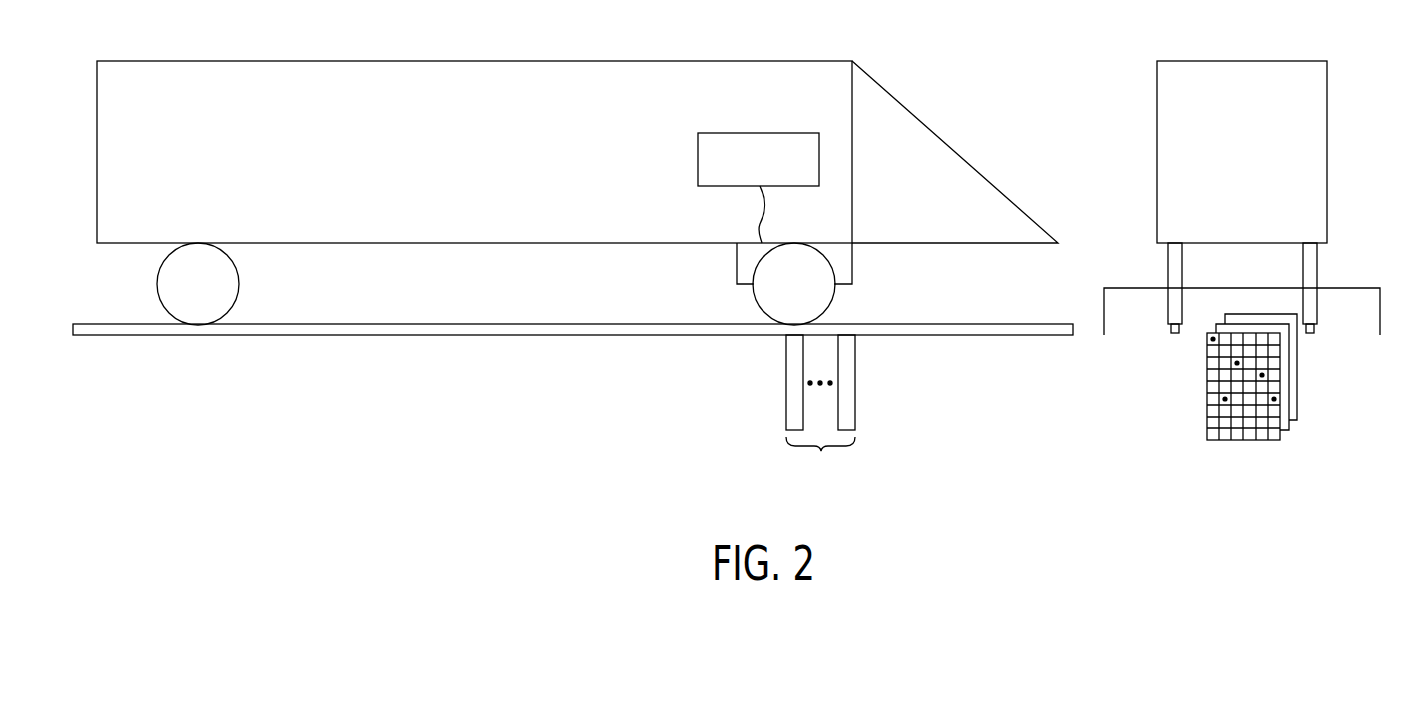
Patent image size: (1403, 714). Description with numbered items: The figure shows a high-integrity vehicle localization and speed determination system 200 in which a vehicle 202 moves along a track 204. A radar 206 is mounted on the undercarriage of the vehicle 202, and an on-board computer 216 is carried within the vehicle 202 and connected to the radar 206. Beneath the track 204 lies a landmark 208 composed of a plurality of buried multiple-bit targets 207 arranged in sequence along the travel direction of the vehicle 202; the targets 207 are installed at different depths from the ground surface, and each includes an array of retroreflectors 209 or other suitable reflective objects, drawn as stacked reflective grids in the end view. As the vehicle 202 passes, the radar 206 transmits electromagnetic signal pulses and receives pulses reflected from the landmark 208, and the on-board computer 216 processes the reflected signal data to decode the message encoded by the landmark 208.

The high-integrity vehicle localization and speed determination system 200 is at (518, 439).
The vehicle 202 is at (493, 174).
The track 204 is at (297, 330).
The radar 206 is at (845, 262).
The multiple-bit targets 207 is at (790, 403).
The landmark 208 is at (1243, 451).
The retroreflectors 209 is at (1290, 395).
The on-board computer 216 is at (772, 176).